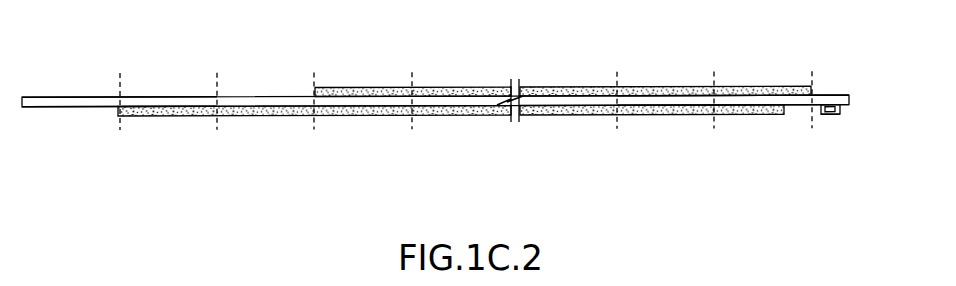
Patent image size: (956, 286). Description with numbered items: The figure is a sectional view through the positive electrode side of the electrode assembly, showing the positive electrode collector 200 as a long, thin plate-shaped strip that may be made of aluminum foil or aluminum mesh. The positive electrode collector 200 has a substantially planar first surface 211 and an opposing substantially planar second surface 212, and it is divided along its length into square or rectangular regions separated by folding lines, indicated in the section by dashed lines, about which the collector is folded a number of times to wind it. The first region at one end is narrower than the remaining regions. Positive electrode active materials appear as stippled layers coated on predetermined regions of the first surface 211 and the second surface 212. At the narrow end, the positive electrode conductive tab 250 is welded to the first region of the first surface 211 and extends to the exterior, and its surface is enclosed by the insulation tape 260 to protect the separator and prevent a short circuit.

The positive electrode collector 200 is at (858, 83).
The first surface 211 is at (845, 110).
The second surface 212 is at (835, 96).
The positive electrode conductive tab 250 is at (840, 112).
The insulation tape 260 is at (830, 116).